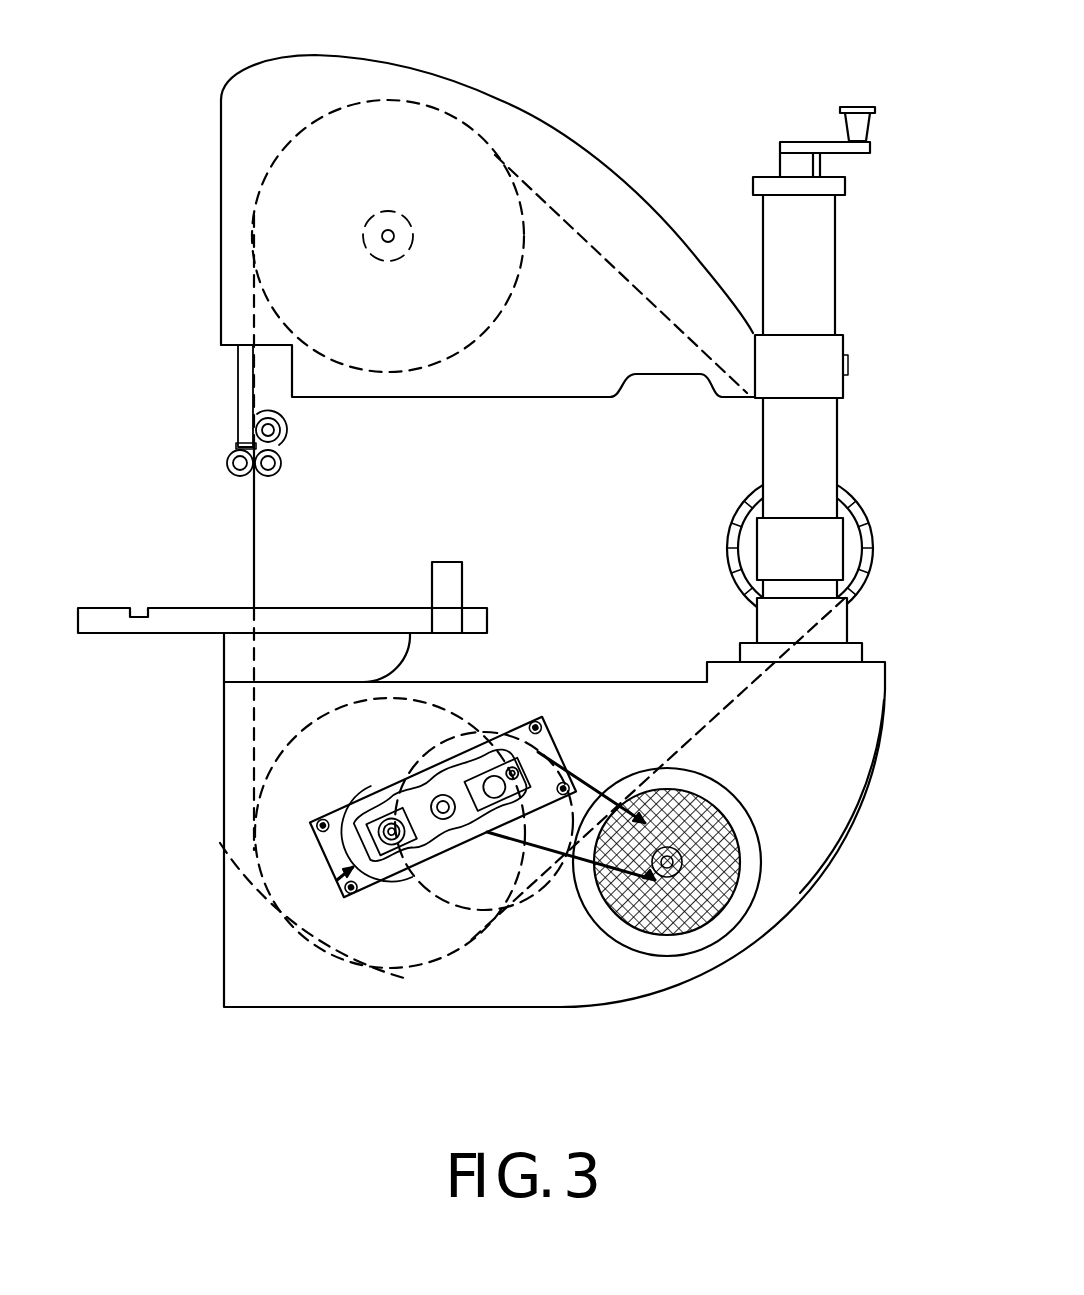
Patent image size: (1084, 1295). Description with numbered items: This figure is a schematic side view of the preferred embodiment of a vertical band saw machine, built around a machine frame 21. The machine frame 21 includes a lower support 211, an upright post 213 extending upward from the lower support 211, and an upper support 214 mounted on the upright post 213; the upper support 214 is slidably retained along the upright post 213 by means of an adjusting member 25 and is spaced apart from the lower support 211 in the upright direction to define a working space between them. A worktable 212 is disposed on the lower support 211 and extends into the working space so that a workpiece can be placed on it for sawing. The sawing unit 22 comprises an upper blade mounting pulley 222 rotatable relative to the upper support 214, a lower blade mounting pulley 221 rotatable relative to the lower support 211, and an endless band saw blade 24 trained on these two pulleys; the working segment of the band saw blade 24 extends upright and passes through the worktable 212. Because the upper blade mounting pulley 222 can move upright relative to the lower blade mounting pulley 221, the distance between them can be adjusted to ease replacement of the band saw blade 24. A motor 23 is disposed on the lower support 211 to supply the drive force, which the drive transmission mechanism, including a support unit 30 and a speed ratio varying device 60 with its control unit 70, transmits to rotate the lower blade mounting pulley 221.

The machine frame 21 is at (845, 832).
The lower support 211 is at (842, 702).
The worktable 212 is at (90, 618).
The upright post 213 is at (823, 408).
The upper support 214 is at (538, 125).
The sawing unit 22 is at (257, 858).
The lower blade mounting pulley 221 is at (273, 892).
The upper blade mounting pulley 222 is at (278, 203).
The motor 23 is at (710, 933).
The endless band saw blade 24 is at (253, 543).
The adjusting member 25 is at (792, 140).
The support unit 30 is at (380, 893).
The speed ratio varying device 60 is at (337, 880).
The control unit 70 is at (422, 860).